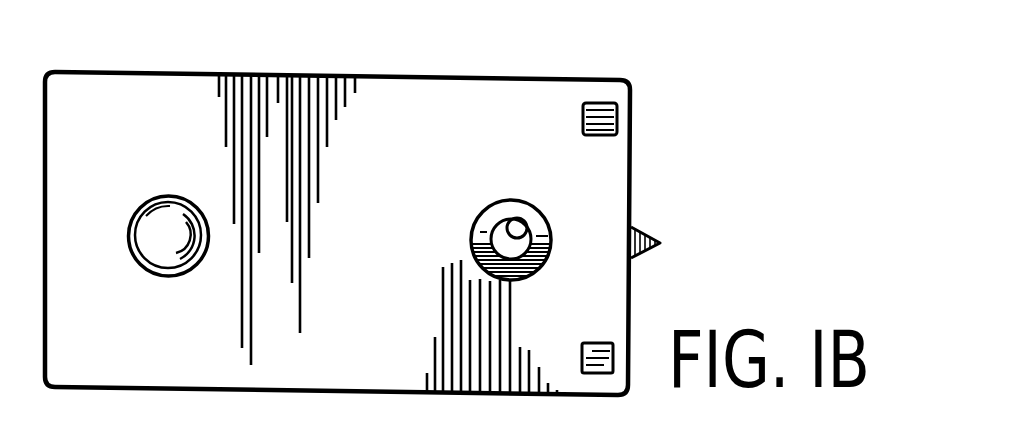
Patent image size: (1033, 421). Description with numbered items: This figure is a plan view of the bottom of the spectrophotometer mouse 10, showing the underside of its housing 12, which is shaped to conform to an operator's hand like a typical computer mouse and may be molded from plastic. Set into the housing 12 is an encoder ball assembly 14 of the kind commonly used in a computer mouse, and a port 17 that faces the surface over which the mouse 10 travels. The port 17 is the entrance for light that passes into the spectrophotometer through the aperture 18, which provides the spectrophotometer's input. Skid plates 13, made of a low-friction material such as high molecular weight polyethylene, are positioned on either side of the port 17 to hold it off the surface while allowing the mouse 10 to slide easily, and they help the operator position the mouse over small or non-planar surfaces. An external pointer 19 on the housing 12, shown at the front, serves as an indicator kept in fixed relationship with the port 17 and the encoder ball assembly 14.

The spectrophotometer mouse 10 is at (647, 98).
The housing 12 is at (143, 72).
The skid plates 13 is at (617, 118).
The encoder ball assembly 14 is at (153, 255).
The port 17 is at (507, 201).
The aperture 18 is at (527, 231).
The external pointer 19 is at (656, 238).